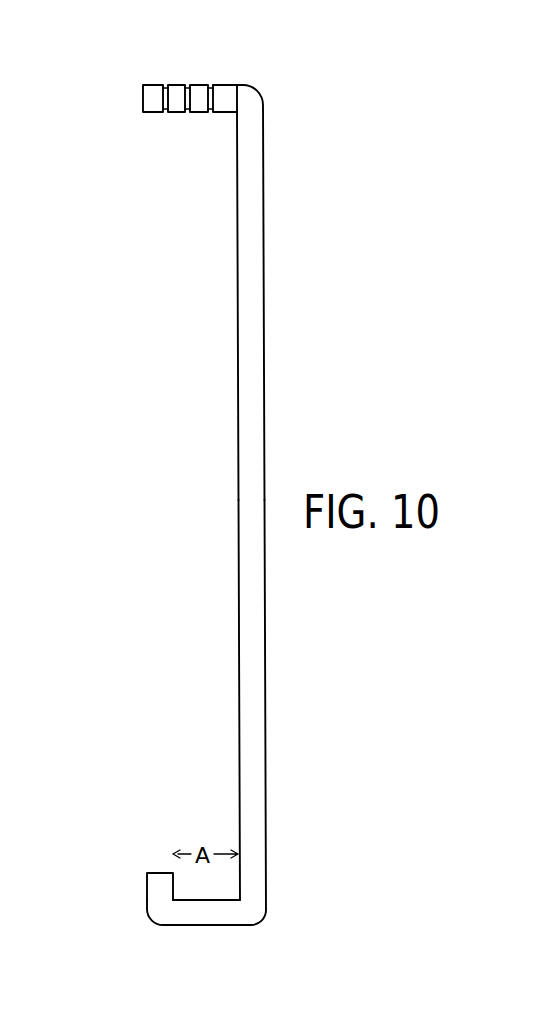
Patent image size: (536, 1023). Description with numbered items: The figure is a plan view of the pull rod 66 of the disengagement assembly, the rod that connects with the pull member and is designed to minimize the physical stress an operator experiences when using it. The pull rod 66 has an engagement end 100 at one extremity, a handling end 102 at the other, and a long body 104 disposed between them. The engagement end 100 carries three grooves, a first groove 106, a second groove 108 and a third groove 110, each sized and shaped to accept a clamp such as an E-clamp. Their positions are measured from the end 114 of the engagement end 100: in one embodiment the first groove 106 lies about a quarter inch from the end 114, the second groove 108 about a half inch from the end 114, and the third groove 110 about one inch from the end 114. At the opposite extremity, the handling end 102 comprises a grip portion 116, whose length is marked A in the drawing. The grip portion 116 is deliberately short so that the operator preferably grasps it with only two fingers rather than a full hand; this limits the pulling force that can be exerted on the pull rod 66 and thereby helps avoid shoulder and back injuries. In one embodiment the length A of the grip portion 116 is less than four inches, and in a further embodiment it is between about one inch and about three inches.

The engagement end 100 is at (176, 91).
The third groove 110 is at (260, 78).
The end 114 is at (142, 100).
The first groove 106 is at (160, 100).
The second groove 108 is at (193, 102).
The pull rod 66 is at (250, 322).
The body 104 is at (263, 617).
The handling end 102 is at (208, 913).
The grip portion 116 is at (188, 892).